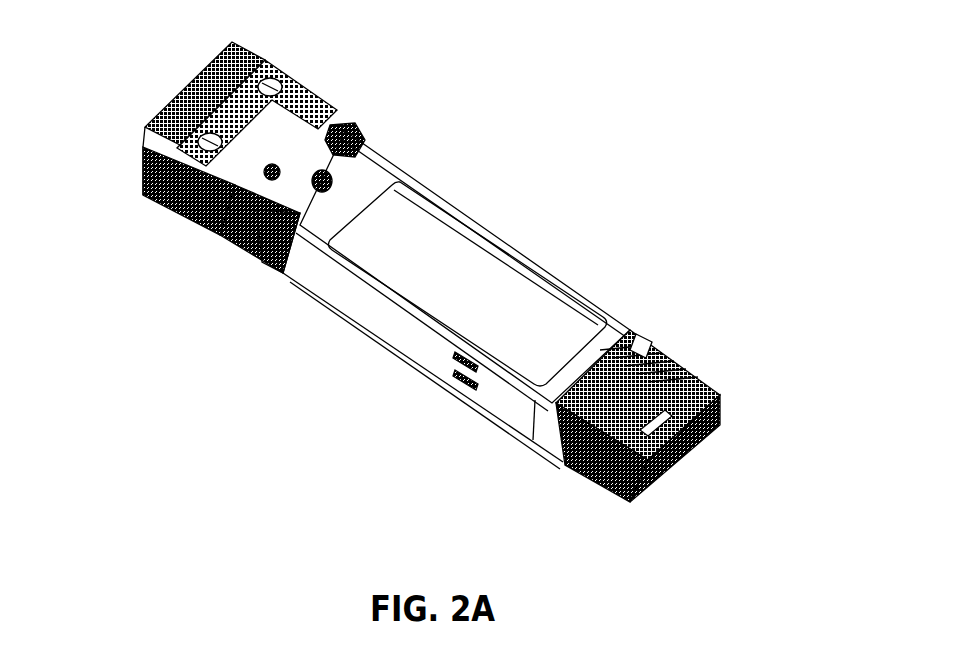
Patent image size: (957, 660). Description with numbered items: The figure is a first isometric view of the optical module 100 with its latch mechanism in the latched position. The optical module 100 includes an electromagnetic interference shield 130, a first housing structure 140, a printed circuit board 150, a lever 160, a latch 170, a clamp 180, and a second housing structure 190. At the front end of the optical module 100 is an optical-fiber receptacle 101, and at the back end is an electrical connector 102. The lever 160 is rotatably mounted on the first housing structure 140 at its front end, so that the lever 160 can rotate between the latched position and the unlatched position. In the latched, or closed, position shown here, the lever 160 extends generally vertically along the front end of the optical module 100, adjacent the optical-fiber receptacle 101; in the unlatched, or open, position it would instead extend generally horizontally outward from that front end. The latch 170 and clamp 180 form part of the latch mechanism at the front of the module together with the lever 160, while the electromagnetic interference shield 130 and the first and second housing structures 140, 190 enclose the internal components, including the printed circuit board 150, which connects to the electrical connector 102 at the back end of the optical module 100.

The optical module 100 is at (716, 76).
The optical-fiber receptacle 101 is at (138, 118).
The electrical connector 102 is at (684, 461).
The electromagnetic interference (EMI) shield 130 is at (280, 273).
The first housing structure 140 is at (207, 238).
The printed circuit board (PCB) 150 is at (638, 343).
The lever 160 is at (143, 183).
The latch 170 is at (245, 52).
The clamp 180 is at (310, 88).
The second housing structure 190 is at (478, 220).